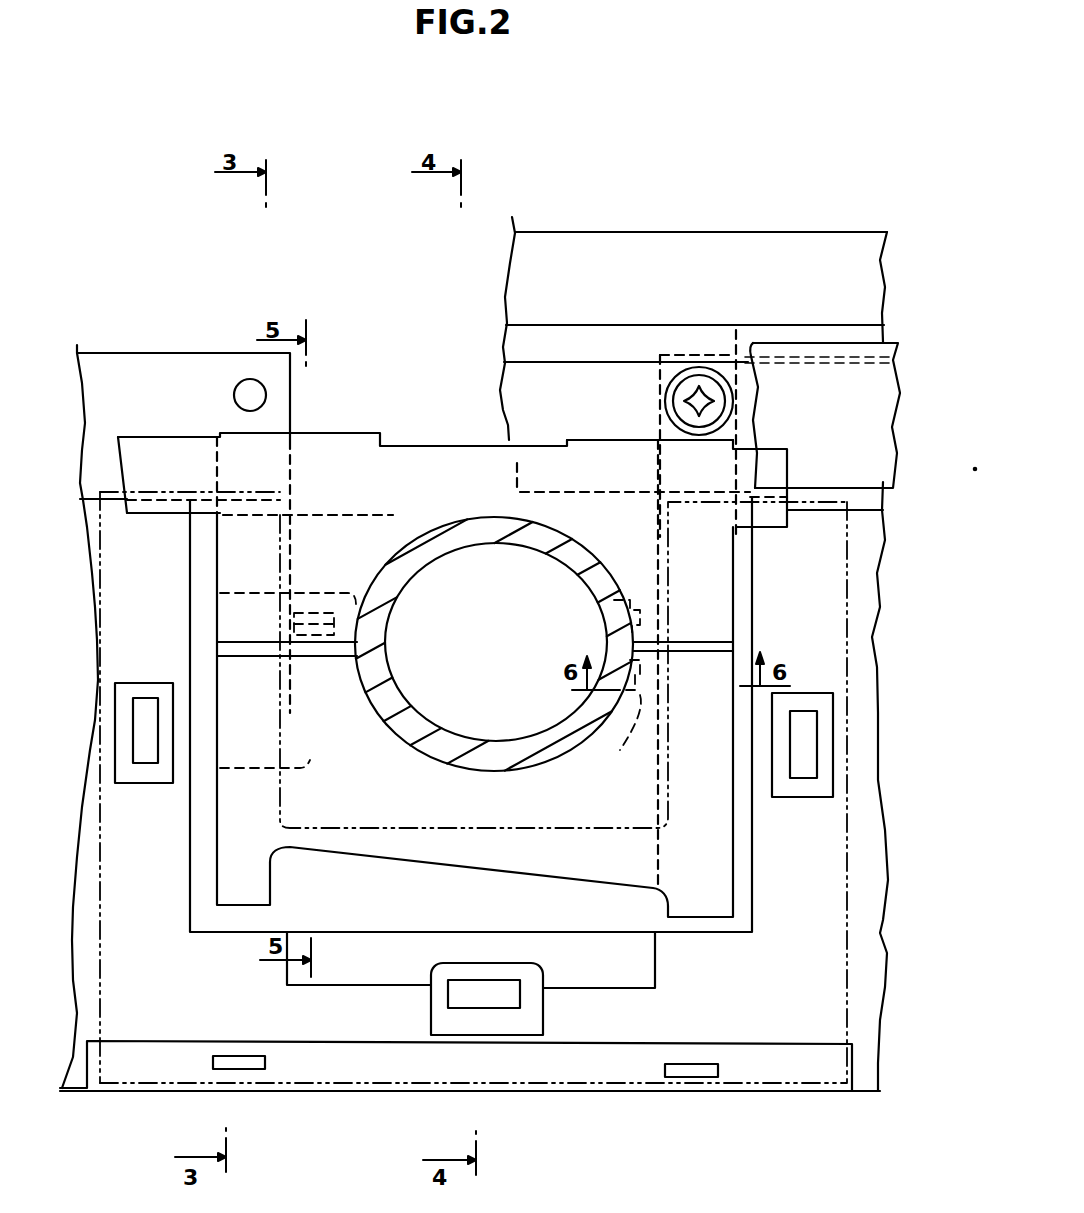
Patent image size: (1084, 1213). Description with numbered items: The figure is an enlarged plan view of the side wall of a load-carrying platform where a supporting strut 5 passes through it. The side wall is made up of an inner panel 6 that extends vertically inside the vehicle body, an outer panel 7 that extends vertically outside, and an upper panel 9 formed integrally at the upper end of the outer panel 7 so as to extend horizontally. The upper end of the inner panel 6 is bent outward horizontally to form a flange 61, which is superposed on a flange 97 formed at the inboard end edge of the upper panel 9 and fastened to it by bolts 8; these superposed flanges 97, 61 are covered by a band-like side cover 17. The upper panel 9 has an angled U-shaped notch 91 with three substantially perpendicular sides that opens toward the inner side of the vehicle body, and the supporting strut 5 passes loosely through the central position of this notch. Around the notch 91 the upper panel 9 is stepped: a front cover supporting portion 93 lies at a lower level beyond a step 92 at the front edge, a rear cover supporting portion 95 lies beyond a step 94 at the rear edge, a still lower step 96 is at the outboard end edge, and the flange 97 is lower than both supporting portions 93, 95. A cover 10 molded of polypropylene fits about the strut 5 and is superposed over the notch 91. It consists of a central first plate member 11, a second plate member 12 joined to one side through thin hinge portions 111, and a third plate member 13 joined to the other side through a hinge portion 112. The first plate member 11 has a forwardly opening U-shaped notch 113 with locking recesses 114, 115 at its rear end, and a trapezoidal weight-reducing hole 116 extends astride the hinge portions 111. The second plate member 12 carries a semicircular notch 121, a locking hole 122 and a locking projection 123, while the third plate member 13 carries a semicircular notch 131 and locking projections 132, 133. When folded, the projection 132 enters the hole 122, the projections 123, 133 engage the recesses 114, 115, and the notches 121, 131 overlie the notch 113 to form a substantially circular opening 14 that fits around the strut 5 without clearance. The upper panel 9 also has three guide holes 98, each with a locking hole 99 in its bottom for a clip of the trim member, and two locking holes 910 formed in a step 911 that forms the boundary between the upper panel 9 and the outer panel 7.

The supporting strut 5 is at (432, 730).
The inner panel 6 is at (693, 226).
The flange 61 is at (522, 412).
The outer panel 7 is at (858, 1092).
The bolts 8 is at (712, 401).
The upper panel 9 is at (880, 772).
The angled U-shaped notch 91 is at (398, 932).
The step 92 is at (195, 852).
The front cover supporting portion 93 is at (278, 887).
The step 94 is at (748, 870).
The rear cover supporting portion 95 is at (660, 910).
The step 96 is at (460, 945).
The flange 97 is at (740, 355).
The guide holes 98 is at (793, 826).
The locking hole 99 is at (147, 763).
The locking holes 910 is at (238, 1056).
The step 911 is at (378, 1088).
The cover 10 is at (590, 437).
The first plate member 11 is at (471, 712).
The thin hinge portions 111 is at (709, 932).
The hinge portion 112 is at (330, 430).
The U-shaped notch 113 is at (310, 762).
The locking recess 114 is at (626, 745).
The locking recess 115 is at (650, 610).
The weight-reducing hole 116 is at (498, 872).
The second plate member 12 is at (752, 905).
The semicircular notch 121 is at (455, 760).
The locking hole 122 is at (308, 660).
The locking projection 123 is at (645, 680).
The third plate member 13 is at (424, 430).
The semicircular notch 131 is at (432, 540).
The locking projection 132 is at (296, 612).
The locking projection 133 is at (665, 645).
The circular opening 14 is at (555, 552).
The side cover 17 is at (826, 345).